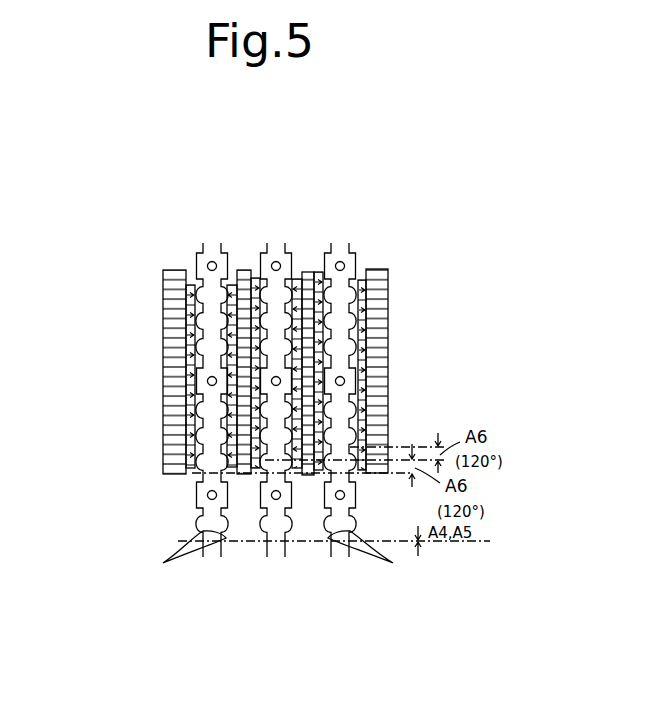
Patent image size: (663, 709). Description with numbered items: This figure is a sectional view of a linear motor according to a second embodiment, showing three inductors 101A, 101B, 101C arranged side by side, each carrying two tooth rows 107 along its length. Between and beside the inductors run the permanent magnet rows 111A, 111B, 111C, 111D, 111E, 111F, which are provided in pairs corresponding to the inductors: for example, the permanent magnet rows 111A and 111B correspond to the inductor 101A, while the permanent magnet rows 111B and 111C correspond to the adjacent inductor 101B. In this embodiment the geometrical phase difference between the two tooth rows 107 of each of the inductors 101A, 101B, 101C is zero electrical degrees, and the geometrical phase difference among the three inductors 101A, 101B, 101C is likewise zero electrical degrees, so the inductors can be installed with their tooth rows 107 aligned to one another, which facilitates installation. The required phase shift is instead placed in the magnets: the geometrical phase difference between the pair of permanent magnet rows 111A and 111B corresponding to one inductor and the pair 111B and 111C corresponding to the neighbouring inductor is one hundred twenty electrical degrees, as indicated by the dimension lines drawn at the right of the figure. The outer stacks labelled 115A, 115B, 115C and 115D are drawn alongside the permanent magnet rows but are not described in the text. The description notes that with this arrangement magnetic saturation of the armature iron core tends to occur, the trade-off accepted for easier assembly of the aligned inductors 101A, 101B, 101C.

The inductor 101A is at (209, 245).
The inductor 101B is at (276, 245).
The inductor 101C is at (340, 245).
The tooth row 107 is at (277, 558).
The permanent magnet row 111A is at (190, 474).
The permanent magnet row 111B is at (236, 476).
The permanent magnet row 111C is at (257, 476).
The permanent magnet row 111D is at (297, 476).
The permanent magnet row 111E is at (320, 476).
The permanent magnet row 111F is at (360, 477).
The permanent magnet 115A is at (165, 290).
The permanent magnet 115B is at (242, 270).
The permanent magnet 115C is at (307, 272).
The permanent magnet 115D is at (389, 283).